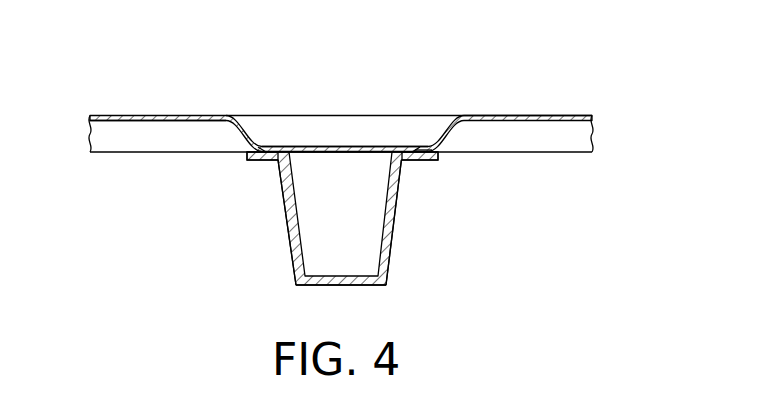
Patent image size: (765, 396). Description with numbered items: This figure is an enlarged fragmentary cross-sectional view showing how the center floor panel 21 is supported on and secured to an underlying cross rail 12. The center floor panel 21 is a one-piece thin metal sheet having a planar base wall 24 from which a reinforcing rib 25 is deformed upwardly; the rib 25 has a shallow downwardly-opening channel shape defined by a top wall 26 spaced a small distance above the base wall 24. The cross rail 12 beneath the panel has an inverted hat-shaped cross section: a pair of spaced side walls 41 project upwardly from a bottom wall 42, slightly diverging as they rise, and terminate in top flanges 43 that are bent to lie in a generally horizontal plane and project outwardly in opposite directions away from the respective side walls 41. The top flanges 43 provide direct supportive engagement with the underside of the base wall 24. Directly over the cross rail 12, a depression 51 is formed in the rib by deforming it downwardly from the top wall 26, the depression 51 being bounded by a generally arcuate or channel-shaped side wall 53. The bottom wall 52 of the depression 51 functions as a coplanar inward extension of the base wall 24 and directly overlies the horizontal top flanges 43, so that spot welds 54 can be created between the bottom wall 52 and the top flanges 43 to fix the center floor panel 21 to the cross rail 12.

The cross rail 12 is at (399, 252).
The center floor panel 21 is at (157, 104).
The base wall 24 is at (131, 153).
The reinforcing rib 25 is at (573, 110).
The top wall 26 is at (521, 119).
The side wall 41 is at (293, 248).
The bottom wall 42 is at (368, 285).
The top flange 43 is at (249, 164).
The depression 51 is at (344, 112).
The bottom wall of depression 52 is at (310, 150).
The side wall of depression 53 is at (421, 150).
The spot weld 54 is at (265, 154).